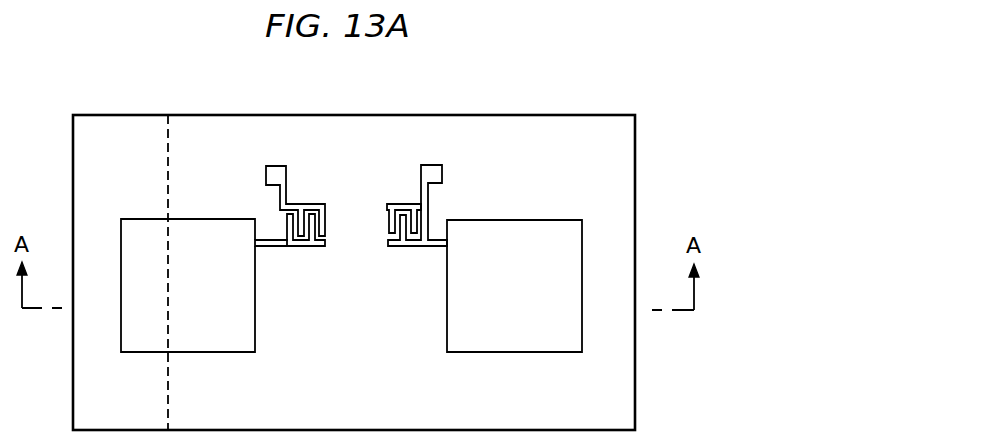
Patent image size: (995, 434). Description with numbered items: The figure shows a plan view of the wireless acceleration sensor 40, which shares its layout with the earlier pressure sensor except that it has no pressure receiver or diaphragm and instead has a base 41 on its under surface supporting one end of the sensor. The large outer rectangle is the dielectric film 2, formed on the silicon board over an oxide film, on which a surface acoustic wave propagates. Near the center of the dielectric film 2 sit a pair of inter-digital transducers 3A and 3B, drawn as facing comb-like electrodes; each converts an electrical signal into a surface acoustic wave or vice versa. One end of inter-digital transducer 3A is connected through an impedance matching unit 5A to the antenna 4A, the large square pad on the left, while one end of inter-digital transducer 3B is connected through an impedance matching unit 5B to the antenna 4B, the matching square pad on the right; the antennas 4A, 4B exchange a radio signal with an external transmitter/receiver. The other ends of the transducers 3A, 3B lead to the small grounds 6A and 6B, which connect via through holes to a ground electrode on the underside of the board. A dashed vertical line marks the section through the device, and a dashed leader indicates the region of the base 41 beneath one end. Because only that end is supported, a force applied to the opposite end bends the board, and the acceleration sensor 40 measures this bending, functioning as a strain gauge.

The acceleration sensor 40 is at (597, 100).
The dielectric film 2 is at (636, 187).
The antenna 4A is at (142, 219).
The antenna 4B is at (508, 221).
The ground 6A is at (277, 166).
The ground 6B is at (434, 165).
The inter-digital transducer 3A is at (311, 204).
The inter-digital transducer 3B is at (389, 204).
The impedance matching unit 5A is at (277, 239).
The impedance matching unit 5B is at (435, 239).
The base 41 is at (123, 326).